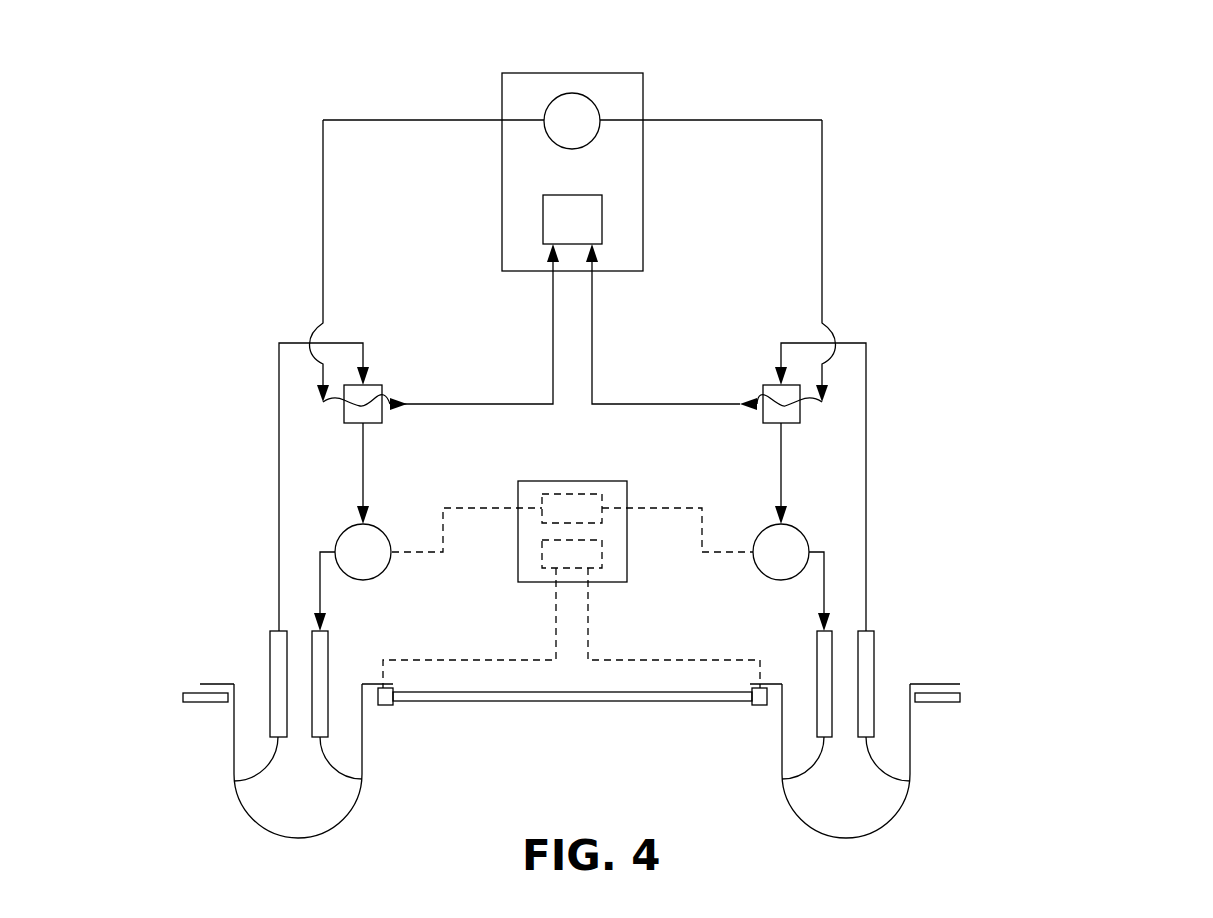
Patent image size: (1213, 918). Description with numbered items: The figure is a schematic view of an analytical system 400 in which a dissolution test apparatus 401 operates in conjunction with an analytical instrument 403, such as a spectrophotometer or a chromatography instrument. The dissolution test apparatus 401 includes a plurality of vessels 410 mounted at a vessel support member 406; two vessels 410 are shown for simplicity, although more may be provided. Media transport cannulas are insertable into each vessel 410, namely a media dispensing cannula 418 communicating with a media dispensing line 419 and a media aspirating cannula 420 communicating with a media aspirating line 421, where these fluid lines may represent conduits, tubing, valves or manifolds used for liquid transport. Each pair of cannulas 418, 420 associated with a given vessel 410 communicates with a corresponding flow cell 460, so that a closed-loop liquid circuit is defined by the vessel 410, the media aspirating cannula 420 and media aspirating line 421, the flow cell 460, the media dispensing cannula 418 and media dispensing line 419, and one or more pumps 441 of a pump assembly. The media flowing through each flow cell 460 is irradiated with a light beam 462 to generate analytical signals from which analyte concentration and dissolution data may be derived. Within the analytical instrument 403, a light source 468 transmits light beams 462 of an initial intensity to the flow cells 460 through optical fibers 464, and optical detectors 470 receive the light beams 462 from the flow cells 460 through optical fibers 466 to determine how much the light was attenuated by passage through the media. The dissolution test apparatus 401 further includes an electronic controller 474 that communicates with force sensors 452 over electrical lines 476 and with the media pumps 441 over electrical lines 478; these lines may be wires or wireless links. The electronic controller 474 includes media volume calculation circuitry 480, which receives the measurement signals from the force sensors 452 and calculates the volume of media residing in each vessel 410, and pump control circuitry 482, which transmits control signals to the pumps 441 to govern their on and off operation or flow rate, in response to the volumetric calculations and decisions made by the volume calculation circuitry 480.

The analytical system 400 is at (1086, 158).
The dissolution test apparatus 401 is at (1006, 610).
The analytical instrument 403 is at (658, 68).
The vessel support member 406 is at (550, 701).
The vessel 410 is at (257, 825).
The media dispensing cannula 418 is at (363, 782).
The media dispensing line 419 is at (320, 583).
The media aspirating cannula 420 is at (237, 775).
The media aspirating line 421 is at (278, 607).
The pump 441 is at (340, 532).
The force sensor 452 is at (384, 705).
The flow cell 460 is at (352, 423).
The light beam 462 is at (336, 400).
The optical fiber 464 is at (323, 224).
The optical fiber 466 is at (501, 400).
The light source 468 is at (545, 110).
The optical detector 470 is at (603, 220).
The electronic controller 474 is at (533, 481).
The electrical line 476 is at (483, 660).
The electrical line 478 is at (472, 507).
The media volume calculation circuitry 480 is at (542, 552).
The pump control circuitry 482 is at (563, 494).